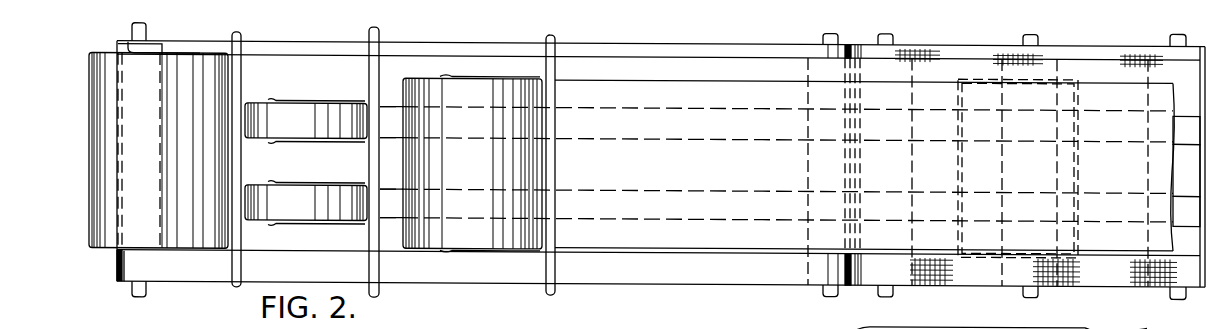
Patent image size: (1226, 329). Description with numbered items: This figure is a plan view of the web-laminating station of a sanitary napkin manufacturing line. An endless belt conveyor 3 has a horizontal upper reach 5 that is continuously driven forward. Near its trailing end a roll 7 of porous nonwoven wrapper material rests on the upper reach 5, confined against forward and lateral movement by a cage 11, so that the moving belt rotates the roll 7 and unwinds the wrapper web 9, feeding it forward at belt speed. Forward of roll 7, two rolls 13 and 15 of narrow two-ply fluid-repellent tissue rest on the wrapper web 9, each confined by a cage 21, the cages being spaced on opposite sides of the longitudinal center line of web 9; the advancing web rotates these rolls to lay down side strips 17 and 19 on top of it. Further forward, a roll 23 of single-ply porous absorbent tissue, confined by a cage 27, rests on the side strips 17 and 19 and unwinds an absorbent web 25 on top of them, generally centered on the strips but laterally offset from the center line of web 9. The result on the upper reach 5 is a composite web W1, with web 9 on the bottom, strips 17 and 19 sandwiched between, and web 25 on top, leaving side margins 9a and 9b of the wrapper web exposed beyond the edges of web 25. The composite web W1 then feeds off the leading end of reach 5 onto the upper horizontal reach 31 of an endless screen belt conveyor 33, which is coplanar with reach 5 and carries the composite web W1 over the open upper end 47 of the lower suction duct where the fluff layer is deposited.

The endless belt conveyor 3 is at (112, 269).
The upper reach 5 is at (606, 49).
The roll of porous napkin-wrapper material 7 is at (100, 143).
The wrapper web 9 is at (295, 246).
The side margin of wrapper web 9a is at (642, 62).
The side margin of wrapper web 9b is at (712, 252).
The cage 11 is at (200, 52).
The roll of fluid-repellent strip material 13 is at (274, 110).
The roll of fluid-repellent strip material 15 is at (290, 210).
The side strip 17 is at (388, 108).
The side strip 19 is at (387, 208).
The cage 21 is at (324, 142).
The roll of absorbent material 23 is at (478, 170).
The absorbent web 25 is at (729, 78).
The cage 27 is at (478, 78).
The upper horizontal reach 31 is at (962, 280).
The endless screen belt conveyor 33 is at (1082, 284).
The open upper end of duct 47 is at (1080, 164).
The composite web W1 is at (884, 258).